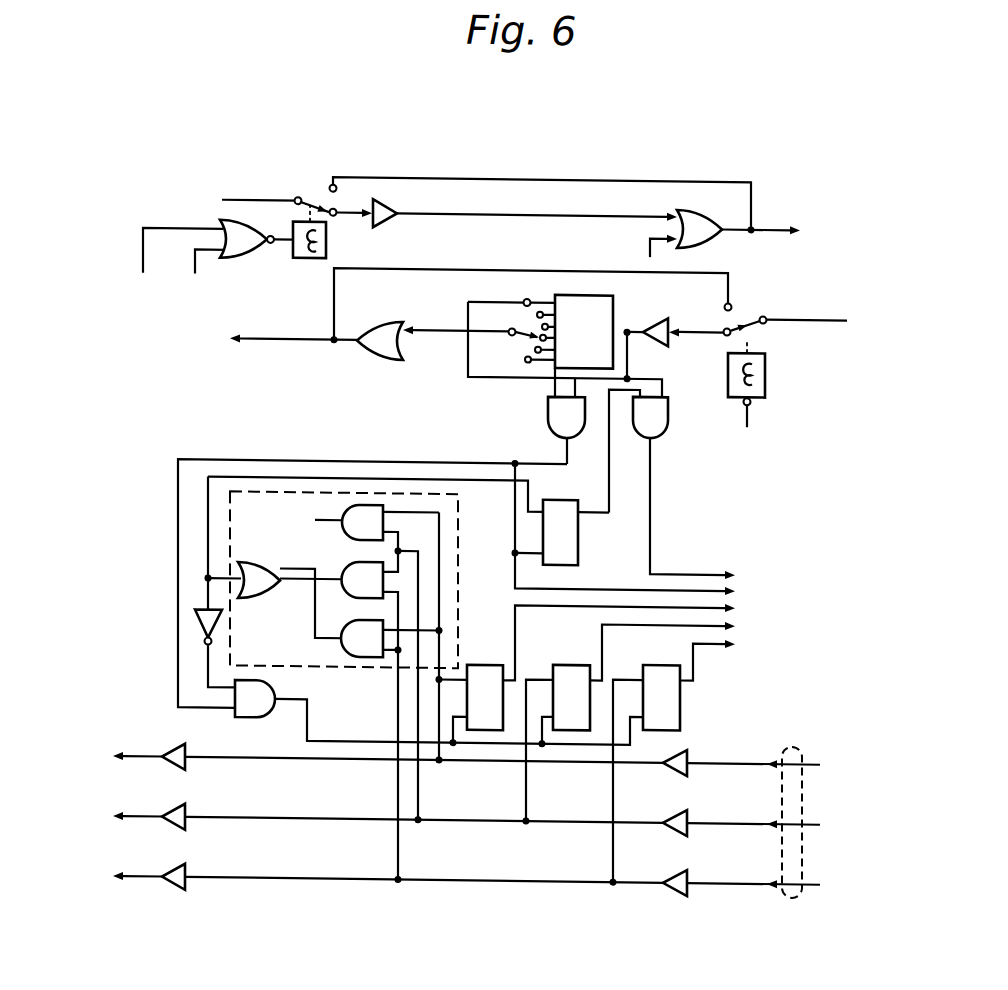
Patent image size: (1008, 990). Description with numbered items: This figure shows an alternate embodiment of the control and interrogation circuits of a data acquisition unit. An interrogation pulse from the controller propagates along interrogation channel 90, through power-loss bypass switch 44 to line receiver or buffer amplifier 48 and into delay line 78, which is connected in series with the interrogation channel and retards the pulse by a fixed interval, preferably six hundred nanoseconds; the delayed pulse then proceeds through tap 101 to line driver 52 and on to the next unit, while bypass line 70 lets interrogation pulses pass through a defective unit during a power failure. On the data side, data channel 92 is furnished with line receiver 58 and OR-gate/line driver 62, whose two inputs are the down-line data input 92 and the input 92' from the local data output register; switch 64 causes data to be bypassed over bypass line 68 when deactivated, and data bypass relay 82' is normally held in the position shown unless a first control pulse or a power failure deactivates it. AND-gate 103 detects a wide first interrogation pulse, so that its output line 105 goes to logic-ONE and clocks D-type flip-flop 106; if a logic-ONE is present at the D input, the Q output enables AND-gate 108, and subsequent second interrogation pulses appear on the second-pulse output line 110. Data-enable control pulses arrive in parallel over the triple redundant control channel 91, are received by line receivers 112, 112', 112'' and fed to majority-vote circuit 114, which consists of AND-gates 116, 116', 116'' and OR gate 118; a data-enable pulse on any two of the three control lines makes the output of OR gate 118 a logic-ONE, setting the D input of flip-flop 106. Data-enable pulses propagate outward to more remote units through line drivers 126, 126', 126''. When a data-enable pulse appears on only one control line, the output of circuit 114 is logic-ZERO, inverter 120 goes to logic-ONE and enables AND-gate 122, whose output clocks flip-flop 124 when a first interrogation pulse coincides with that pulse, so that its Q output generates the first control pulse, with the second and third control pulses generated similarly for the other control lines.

The data channel 92 is at (505, 195).
The switch 64 is at (312, 193).
The bypass line 68 is at (466, 172).
The line receiver 58 is at (390, 223).
The data bypass relay 82' is at (223, 253).
The bypass line 70 is at (466, 264).
The input from local data output register 92' is at (638, 245).
The OR-gate/line driver 62 is at (738, 230).
The power-loss bypass switch 44 is at (752, 310).
The interrogation channel 90 is at (817, 310).
The line receiver 48 is at (653, 311).
The delay line 78 is at (565, 346).
The tap 101 is at (523, 333).
The line driver 52 is at (316, 340).
The line driver 126 is at (432, 585).
The line driver 126' is at (388, 830).
The line driver 126'' is at (388, 890).
The AND-gate 103 is at (548, 408).
The output line 105 is at (515, 454).
The AND-gate 108 is at (668, 411).
The S2 output line 110 is at (652, 498).
The D-type flip-flop 106 is at (580, 525).
The majority-vote circuit 114 is at (458, 529).
The OR gate 118 is at (275, 579).
The AND-gate 116 is at (390, 664).
The AND-gate 116' is at (372, 722).
The AND-gate 116'' is at (404, 637).
The inverter 120 is at (195, 621).
The AND-gate 122 is at (245, 715).
The flip-flop 124 is at (486, 659).
The line receiver 112 is at (744, 791).
The line receiver 112' is at (722, 833).
The line receiver 112'' is at (719, 893).
The control channel 91 is at (795, 736).